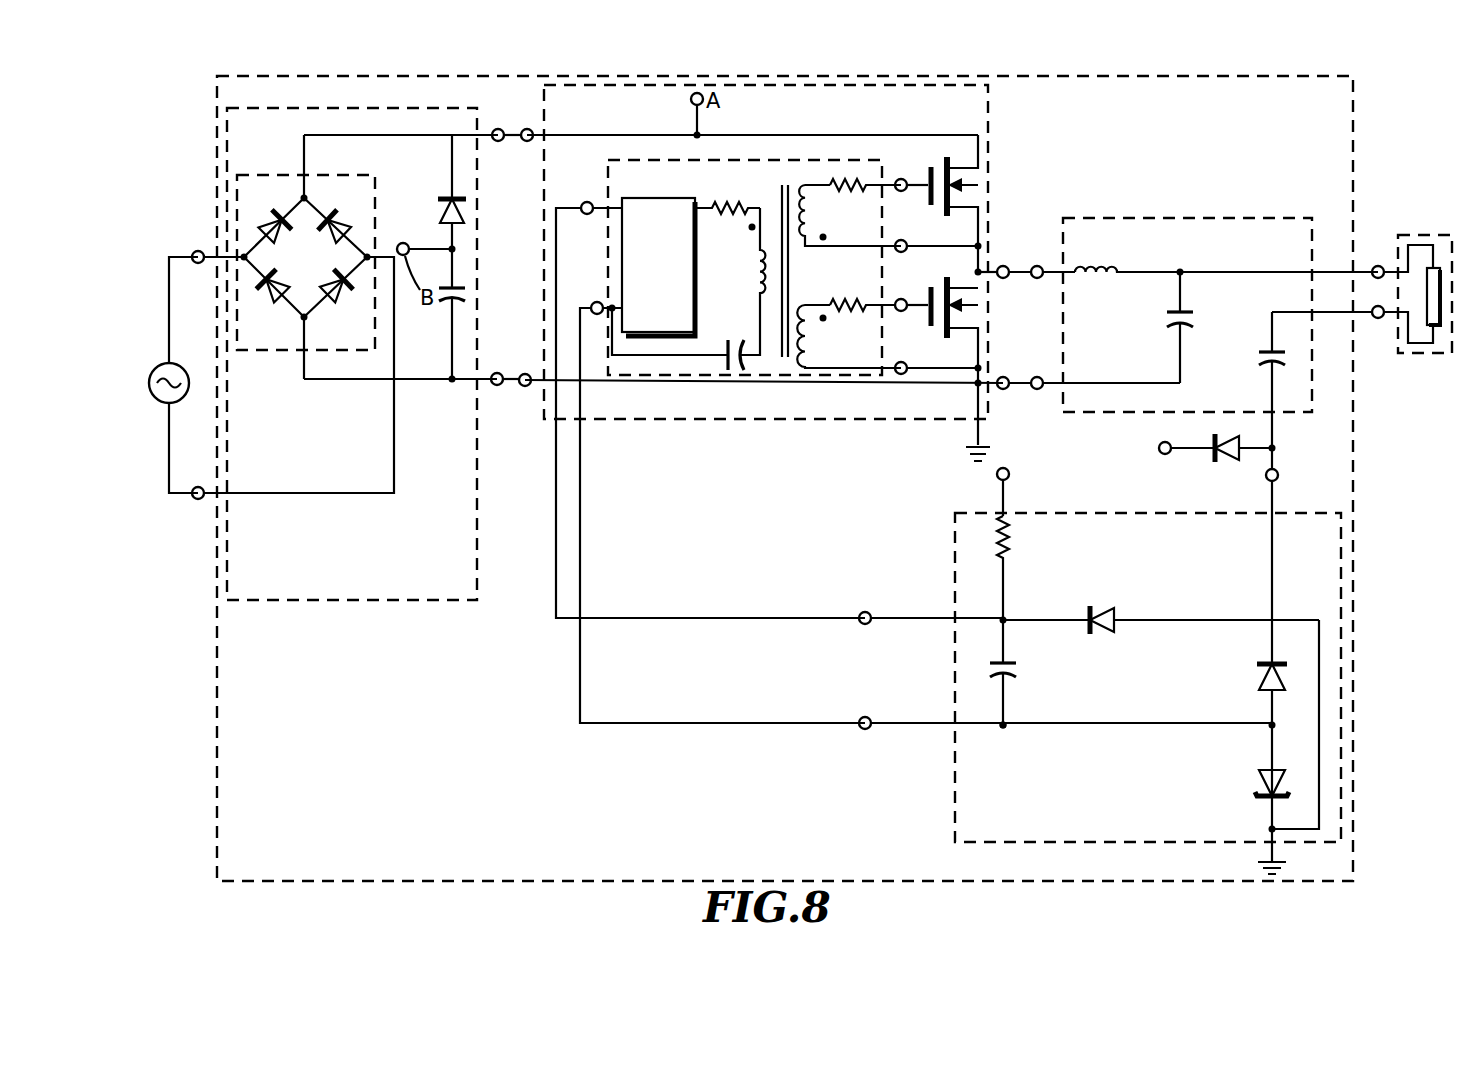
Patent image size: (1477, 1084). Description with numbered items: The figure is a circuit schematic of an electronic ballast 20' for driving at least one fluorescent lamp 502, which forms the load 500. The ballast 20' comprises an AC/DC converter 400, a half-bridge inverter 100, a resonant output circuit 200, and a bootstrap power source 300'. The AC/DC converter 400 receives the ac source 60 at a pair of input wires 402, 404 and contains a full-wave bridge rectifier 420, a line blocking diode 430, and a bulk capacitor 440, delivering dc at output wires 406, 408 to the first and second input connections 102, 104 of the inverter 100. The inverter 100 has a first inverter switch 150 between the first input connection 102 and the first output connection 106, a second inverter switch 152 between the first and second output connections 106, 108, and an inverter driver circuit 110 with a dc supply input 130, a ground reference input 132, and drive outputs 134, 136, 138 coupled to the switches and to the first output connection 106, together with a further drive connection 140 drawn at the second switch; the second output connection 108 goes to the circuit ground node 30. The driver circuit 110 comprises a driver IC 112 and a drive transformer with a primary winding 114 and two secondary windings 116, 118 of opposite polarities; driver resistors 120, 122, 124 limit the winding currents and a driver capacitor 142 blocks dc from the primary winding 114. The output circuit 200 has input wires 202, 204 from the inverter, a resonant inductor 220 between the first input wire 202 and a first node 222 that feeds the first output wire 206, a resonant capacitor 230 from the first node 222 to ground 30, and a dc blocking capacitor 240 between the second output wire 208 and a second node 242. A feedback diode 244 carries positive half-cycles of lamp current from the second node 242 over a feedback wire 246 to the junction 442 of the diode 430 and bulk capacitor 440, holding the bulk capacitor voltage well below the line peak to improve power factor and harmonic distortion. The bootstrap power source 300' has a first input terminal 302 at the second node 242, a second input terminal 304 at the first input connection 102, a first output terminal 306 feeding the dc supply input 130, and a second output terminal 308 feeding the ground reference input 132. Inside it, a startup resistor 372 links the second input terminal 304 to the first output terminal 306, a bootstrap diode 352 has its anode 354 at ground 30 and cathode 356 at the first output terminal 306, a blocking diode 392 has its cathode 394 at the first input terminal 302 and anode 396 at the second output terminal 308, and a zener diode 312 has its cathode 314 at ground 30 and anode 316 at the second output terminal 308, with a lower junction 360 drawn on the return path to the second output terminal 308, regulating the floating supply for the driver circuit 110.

The electronic ballast 20' is at (760, 478).
The AC/DC converter 400 is at (335, 92).
The full-wave bridge rectifier 420 is at (287, 172).
The line blocking diode 430 is at (448, 197).
The bulk capacitor 440 is at (466, 290).
The junction 442 is at (449, 247).
The input wire 402 is at (193, 253).
The input wire 404 is at (193, 500).
The output wire 406 is at (497, 128).
The output wire 408 is at (497, 372).
The source of alternating current 60 is at (160, 363).
The first input connection 102 is at (527, 142).
The second input connection 104 is at (524, 387).
The first output connection 106 is at (1005, 265).
The second output connection 108 is at (1005, 376).
The half-bridge inverter 100 is at (990, 118).
The inverter driver circuit 110 is at (705, 160).
The driver IC 112 is at (628, 198).
The primary winding 114 is at (757, 280).
The secondary winding 116 is at (808, 190).
The secondary winding 118 is at (820, 332).
The driver resistor 120 is at (726, 203).
The driver resistor 122 is at (855, 190).
The driver resistor 124 is at (834, 305).
The dc supply input 130 is at (586, 201).
The ground reference input 132 is at (596, 301).
The first drive output 134 is at (900, 179).
The second drive output 136 is at (900, 240).
The third drive output 138 is at (896, 298).
The source terminal 140 is at (900, 362).
The driver capacitor 142 is at (731, 340).
The first inverter switch 150 is at (965, 185).
The second inverter switch 152 is at (950, 282).
The resonant output circuit 200 is at (1200, 218).
The first input wire 202 is at (1037, 279).
The second input wire 204 is at (1039, 390).
The first output wire 206 is at (1373, 266).
The second output wire 208 is at (1373, 318).
The resonant inductor 220 is at (1110, 262).
The first node 222 is at (1182, 270).
The resonant capacitor 230 is at (1172, 309).
The dc blocking capacitor 240 is at (1268, 346).
The second node 242 is at (1274, 446).
The feedback diode 244 is at (1212, 440).
The feedback wire 246 is at (1160, 442).
The bootstrap power source 300' is at (1110, 677).
The first input terminal 302 is at (1279, 475).
The second input terminal 304 is at (1010, 472).
The first output terminal 306 is at (860, 612).
The second output terminal 308 is at (860, 717).
The zener diode 312 is at (1262, 779).
The cathode 314 is at (1270, 820).
The anode 316 is at (1270, 752).
The bootstrap diode 352 is at (1087, 610).
The anode 354 is at (1190, 618).
The cathode 356 is at (1037, 632).
The node 360 is at (1010, 680).
The startup resistor 372 is at (1008, 537).
The blocking diode 392 is at (1263, 678).
The cathode 394 is at (1270, 640).
The anode 396 is at (1270, 713).
The circuit ground node 30 is at (960, 452).
The load 500 is at (1425, 353).
The fluorescent lamp 502 is at (1436, 266).